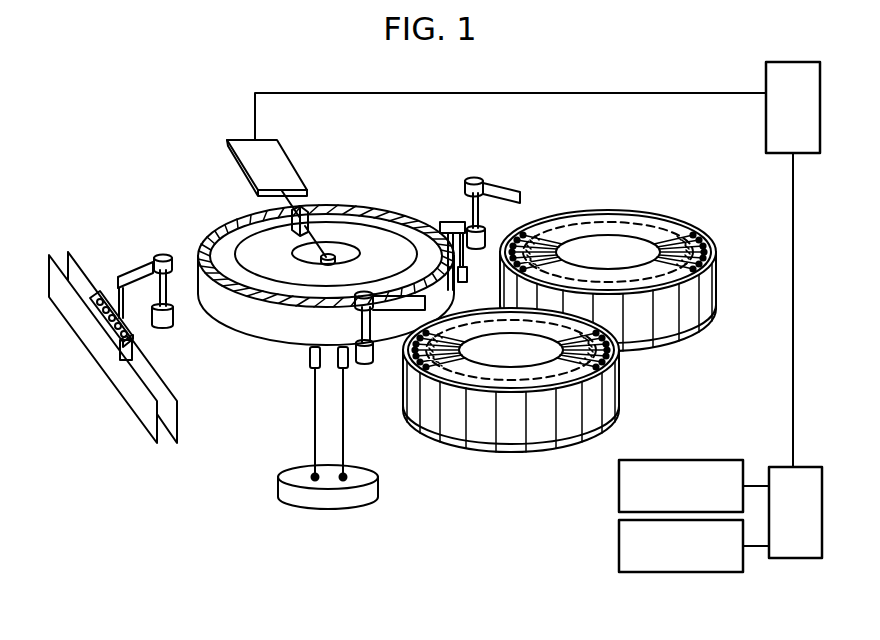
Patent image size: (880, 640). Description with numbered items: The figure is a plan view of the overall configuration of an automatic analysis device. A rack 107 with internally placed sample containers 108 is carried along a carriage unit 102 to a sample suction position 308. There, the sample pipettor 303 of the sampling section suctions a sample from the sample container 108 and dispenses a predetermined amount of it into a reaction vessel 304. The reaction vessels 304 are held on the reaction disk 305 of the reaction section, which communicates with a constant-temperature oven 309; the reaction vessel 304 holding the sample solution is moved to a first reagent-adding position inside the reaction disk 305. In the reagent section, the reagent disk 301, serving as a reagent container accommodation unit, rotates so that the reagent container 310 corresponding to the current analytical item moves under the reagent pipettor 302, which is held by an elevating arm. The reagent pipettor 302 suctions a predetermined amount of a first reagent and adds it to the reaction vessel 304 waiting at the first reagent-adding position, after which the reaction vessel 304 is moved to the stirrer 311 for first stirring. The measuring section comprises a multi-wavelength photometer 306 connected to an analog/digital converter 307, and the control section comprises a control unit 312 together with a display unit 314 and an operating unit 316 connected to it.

The carriage unit 102 is at (58, 256).
The rack 107 is at (97, 318).
The sample container 108 is at (97, 296).
The sample suction position 308 is at (112, 340).
The sample pipettor 303 is at (147, 260).
The reaction vessel 304 is at (383, 208).
The reaction disk 305 is at (240, 237).
The multi-wavelength photometer 306 is at (295, 170).
The reagent disk 301 is at (559, 336).
The reagent container 310 is at (568, 222).
The stirrer 311 is at (447, 221).
The reagent pipettor 302 is at (518, 170).
The constant-temperature oven 309 is at (342, 509).
The analog/digital converter 307 is at (766, 128).
The control unit 312 is at (795, 559).
The display unit 314 is at (706, 459).
The operating unit 316 is at (688, 573).